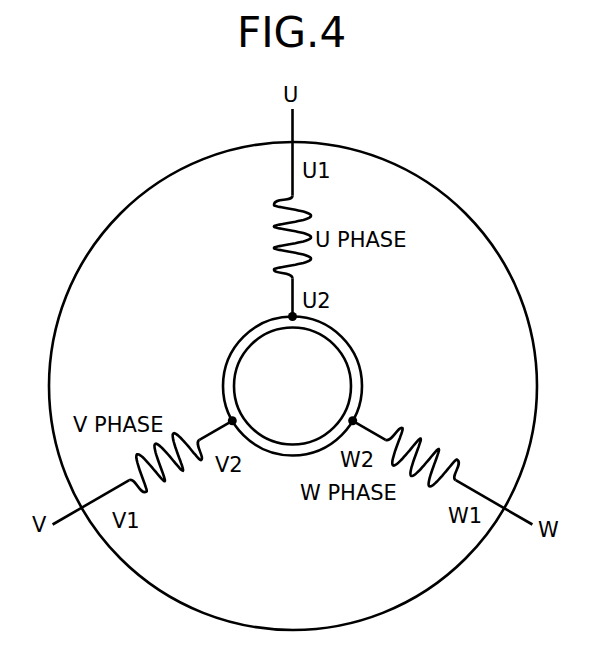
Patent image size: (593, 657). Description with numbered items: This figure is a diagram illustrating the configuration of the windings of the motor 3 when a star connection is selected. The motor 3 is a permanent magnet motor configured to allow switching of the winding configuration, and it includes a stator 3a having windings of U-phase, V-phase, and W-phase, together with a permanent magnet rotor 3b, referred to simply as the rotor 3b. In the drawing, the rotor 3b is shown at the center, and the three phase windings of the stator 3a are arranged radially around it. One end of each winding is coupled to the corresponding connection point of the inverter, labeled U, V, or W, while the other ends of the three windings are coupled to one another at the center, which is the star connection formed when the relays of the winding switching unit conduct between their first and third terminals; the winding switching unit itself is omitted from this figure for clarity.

The motor 3 is at (434, 187).
The stator 3a is at (272, 246).
The permanent magnet rotor 3b is at (353, 352).